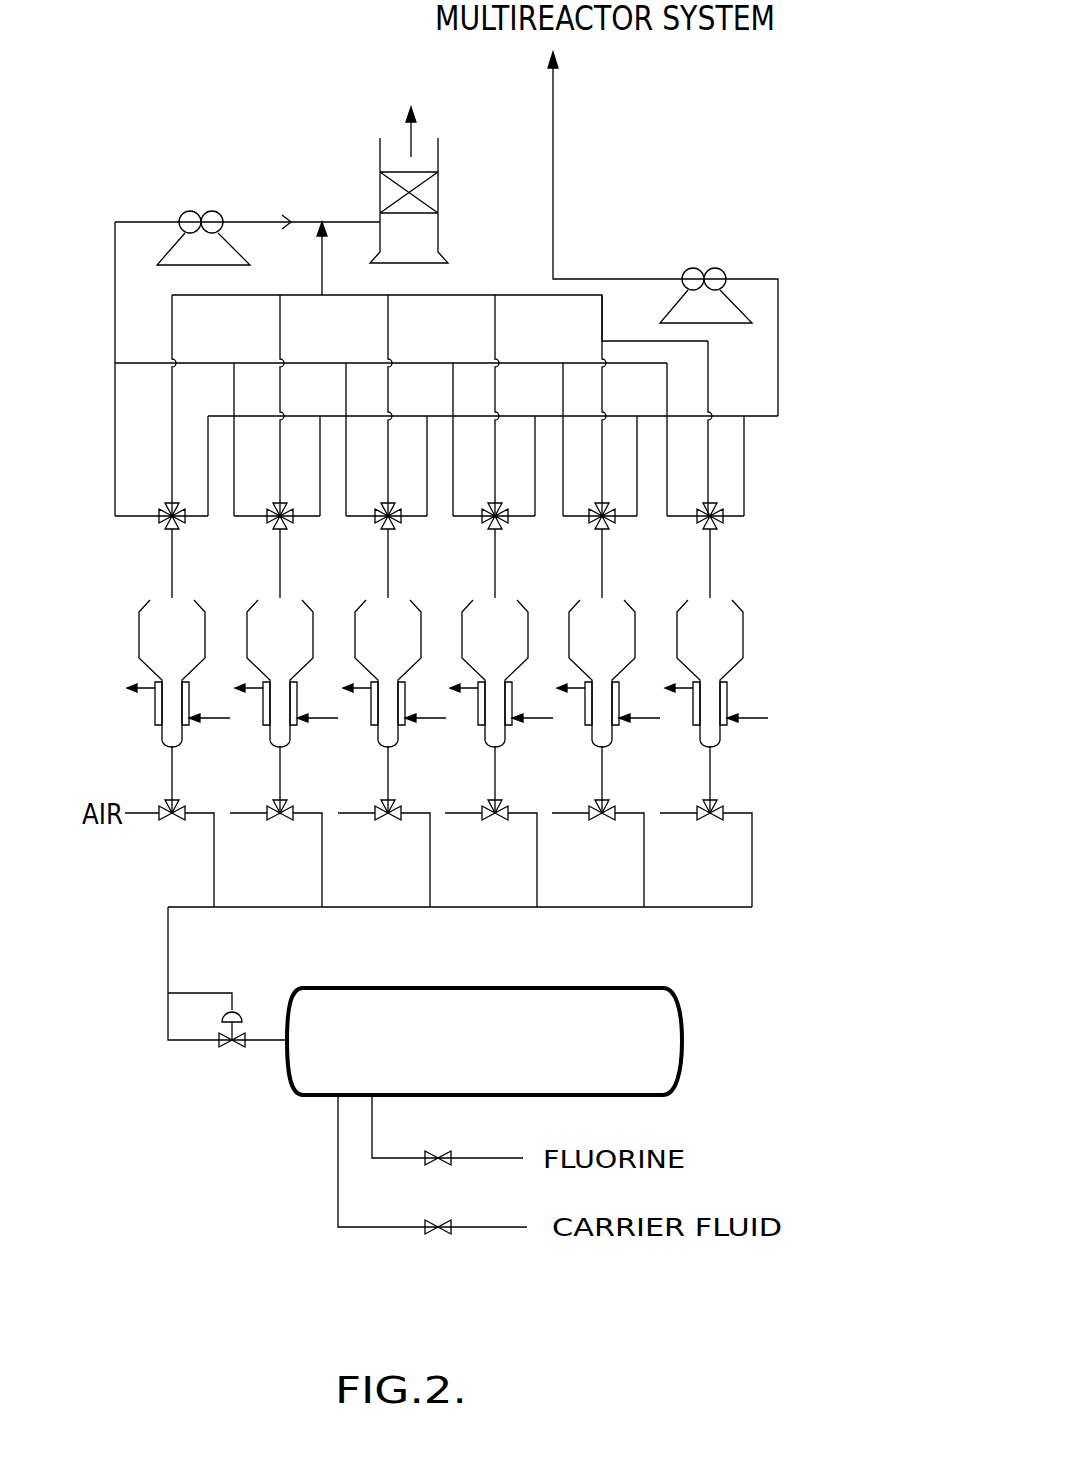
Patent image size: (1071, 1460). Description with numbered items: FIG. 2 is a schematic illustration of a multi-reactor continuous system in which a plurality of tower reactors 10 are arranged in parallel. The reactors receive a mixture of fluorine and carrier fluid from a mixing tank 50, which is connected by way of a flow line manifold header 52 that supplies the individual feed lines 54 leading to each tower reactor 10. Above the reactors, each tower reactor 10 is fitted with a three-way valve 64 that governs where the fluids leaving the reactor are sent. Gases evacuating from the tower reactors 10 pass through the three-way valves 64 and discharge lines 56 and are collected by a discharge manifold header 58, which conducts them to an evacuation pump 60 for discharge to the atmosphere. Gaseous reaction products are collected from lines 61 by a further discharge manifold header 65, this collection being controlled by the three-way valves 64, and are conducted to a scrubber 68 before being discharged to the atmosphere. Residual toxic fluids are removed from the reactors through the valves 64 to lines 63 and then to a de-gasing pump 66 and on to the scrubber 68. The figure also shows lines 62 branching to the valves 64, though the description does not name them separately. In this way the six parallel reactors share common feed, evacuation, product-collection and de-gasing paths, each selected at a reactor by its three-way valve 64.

The tower reactor 10 is at (528, 652).
The mixing tank 50 is at (665, 1030).
The flow line manifold header 52 is at (387, 907).
The feed line 54 is at (752, 892).
The discharge line 56 is at (535, 460).
The discharge manifold header 58 is at (355, 413).
The evacuation pump 60 is at (715, 270).
The line 61 is at (708, 490).
The feed lines from line 63 62 is at (346, 450).
The line 63 is at (404, 360).
The three-way valve 64 is at (612, 522).
The discharge manifold header 65 is at (475, 295).
The de-gasing pump 66 is at (212, 212).
The scrubber 68 is at (442, 203).